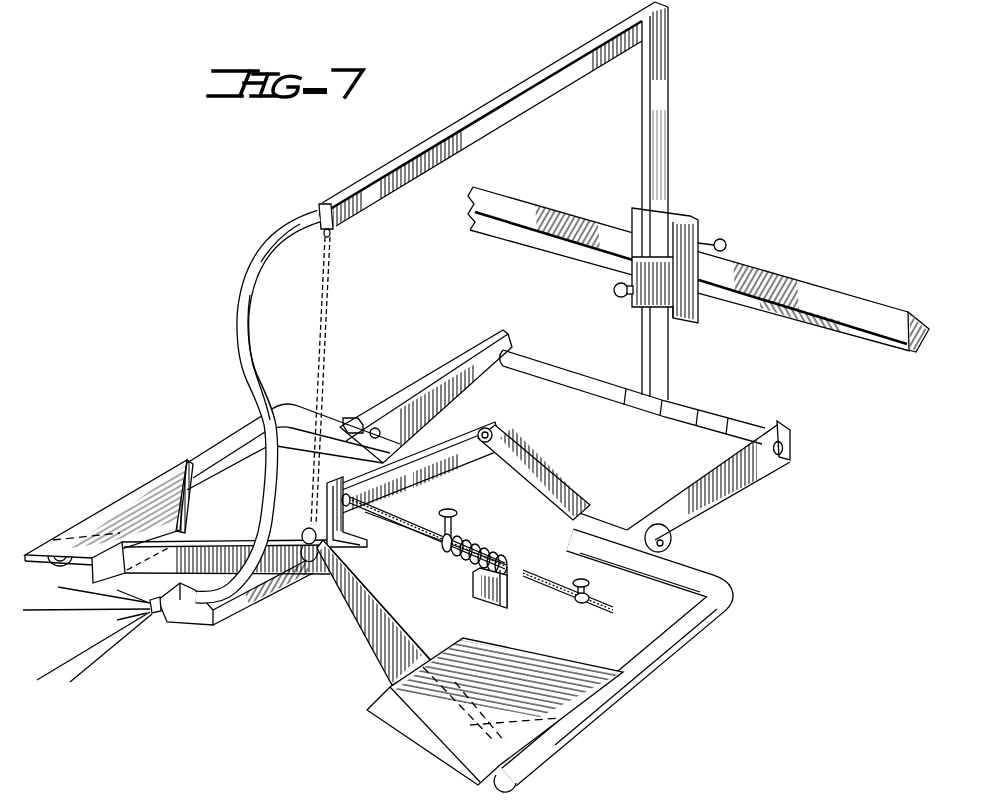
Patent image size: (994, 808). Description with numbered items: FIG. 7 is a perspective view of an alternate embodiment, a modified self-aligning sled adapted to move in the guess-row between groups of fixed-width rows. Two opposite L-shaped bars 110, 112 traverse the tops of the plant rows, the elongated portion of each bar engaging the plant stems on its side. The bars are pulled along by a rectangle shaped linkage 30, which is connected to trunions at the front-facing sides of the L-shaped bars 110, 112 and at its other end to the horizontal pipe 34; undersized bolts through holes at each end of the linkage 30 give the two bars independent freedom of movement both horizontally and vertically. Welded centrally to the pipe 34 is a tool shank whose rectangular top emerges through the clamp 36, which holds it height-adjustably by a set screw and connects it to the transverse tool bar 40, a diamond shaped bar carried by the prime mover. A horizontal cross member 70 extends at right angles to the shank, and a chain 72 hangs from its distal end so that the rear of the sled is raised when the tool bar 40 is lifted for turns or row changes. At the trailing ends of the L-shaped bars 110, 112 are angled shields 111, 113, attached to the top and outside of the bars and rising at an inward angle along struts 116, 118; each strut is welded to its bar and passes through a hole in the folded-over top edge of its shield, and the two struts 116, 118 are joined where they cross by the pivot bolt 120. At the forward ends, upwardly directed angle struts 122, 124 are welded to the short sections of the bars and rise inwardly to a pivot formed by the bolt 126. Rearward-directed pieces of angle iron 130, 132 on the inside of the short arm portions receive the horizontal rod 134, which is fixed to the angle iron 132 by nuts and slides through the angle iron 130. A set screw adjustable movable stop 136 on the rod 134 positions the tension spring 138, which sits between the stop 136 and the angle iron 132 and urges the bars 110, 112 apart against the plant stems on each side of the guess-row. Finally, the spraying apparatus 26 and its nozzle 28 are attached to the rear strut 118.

The spraying apparatus 26 is at (237, 614).
The nozzle 28 is at (157, 614).
The rectangle shaped linkage 30 is at (468, 352).
The horizontal pipe 34 is at (705, 412).
The clamp 36 is at (692, 232).
The transverse tool bar 40 is at (788, 290).
The horizontal cross member 70 is at (493, 122).
The chain 72 is at (328, 330).
The L-shaped bar 110 is at (697, 644).
The angled shield 111 is at (443, 738).
The L-shaped bar 112 is at (217, 443).
The angled shield 113 is at (133, 498).
The strut 116 is at (388, 640).
The strut 118 is at (233, 537).
The pivot bolt 120 is at (302, 574).
The forward upwardly directed angle strut 122 is at (553, 475).
The forward upwardly directed angle strut 124 is at (468, 432).
The bolt 126 is at (518, 428).
The angle iron 130 is at (513, 603).
The angle iron 132 is at (370, 533).
The horizontal rod 134 is at (428, 522).
The movable stop 136 is at (441, 548).
The tension spring 138 is at (486, 547).